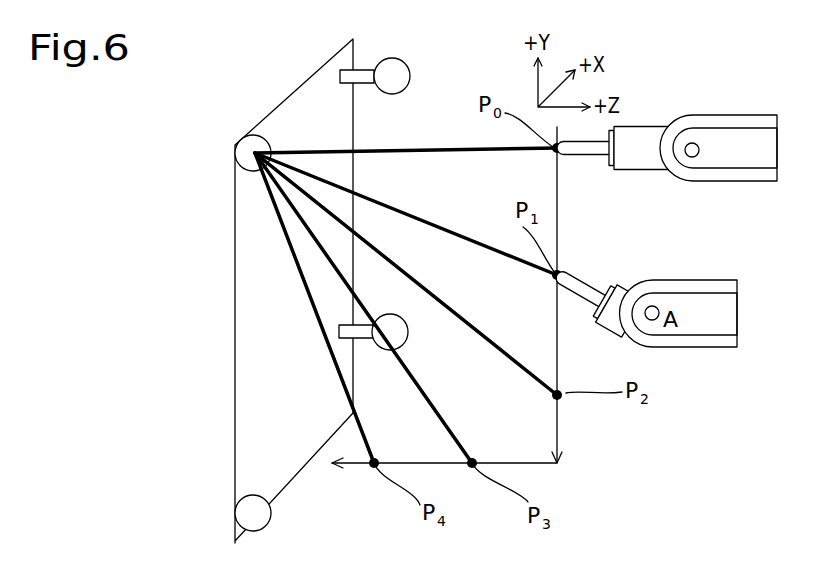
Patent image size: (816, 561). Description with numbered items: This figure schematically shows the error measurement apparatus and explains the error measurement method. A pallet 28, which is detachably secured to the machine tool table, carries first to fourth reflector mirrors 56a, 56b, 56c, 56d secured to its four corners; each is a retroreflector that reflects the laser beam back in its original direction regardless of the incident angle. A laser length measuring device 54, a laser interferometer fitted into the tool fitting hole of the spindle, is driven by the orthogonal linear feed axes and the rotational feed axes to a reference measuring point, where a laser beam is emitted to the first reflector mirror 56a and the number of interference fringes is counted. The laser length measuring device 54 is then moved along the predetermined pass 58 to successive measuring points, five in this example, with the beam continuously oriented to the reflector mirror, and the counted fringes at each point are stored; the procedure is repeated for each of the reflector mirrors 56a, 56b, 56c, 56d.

The pallet 28 is at (281, 101).
The laser length measuring device 54 is at (590, 157).
The first reflector mirror 56a is at (238, 168).
The second reflector mirror 56b is at (397, 73).
The third reflector mirror 56c is at (400, 333).
The fourth reflector mirror 56d is at (262, 519).
The predetermined pass 58 is at (557, 232).